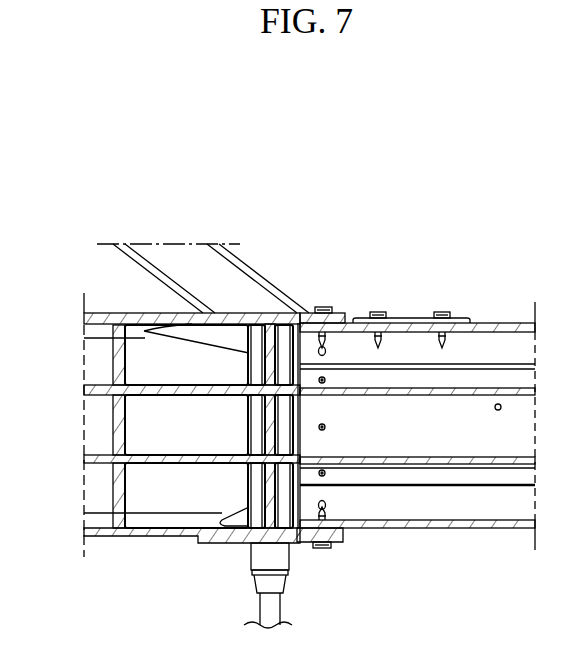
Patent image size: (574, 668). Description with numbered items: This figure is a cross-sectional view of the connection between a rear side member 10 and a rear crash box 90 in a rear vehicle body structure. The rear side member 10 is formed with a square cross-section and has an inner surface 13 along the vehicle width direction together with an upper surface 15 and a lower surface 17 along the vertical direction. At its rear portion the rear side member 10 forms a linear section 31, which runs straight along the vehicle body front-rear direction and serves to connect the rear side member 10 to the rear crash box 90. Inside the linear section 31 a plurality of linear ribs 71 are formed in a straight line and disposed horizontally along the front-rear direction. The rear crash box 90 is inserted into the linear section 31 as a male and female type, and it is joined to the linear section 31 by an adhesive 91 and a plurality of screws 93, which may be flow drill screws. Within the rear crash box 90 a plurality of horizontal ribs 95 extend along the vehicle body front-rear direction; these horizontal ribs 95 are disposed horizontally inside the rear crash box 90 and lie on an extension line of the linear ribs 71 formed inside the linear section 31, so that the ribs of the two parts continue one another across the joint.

The rear side member 10 is at (205, 552).
The inner surface 13 is at (95, 356).
The upper surface 15 is at (243, 312).
The lower surface 17 is at (143, 538).
The linear section 31 is at (160, 536).
The linear ribs 71 is at (172, 390).
The rear crash box 90 is at (472, 543).
The adhesive 91 is at (338, 312).
The screws 93 is at (323, 306).
The horizontal ribs 95 is at (405, 392).